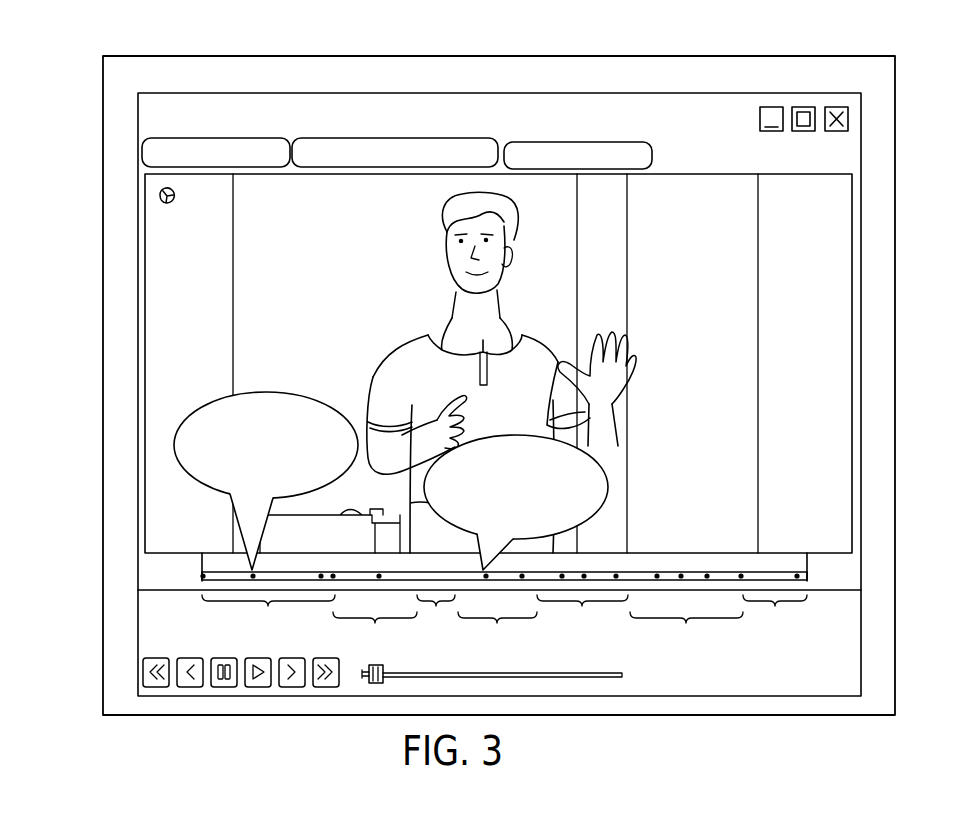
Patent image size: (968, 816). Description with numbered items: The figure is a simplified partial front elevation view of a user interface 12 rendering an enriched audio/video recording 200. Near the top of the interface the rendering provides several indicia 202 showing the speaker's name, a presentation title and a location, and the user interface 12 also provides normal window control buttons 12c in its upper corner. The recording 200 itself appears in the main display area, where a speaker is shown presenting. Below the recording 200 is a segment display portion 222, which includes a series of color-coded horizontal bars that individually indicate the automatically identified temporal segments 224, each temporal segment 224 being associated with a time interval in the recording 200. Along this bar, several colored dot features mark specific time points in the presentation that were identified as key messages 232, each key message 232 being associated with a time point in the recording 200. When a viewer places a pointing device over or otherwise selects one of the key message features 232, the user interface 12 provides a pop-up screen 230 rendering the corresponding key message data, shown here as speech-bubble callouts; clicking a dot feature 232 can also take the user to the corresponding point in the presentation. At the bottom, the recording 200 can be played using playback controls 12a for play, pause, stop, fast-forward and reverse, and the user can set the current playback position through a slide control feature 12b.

The user interface 12 is at (103, 76).
The playback controls 12a is at (124, 675).
The slide control feature 12b is at (547, 682).
The window control buttons 12c is at (866, 122).
The enriched audio/video recording 200 is at (129, 330).
The indicia 202 is at (129, 157).
The segment display portion 222 is at (191, 574).
The temporal segment 224 is at (504, 623).
The pop-up screen 230 is at (207, 492).
The key message 232 is at (323, 581).